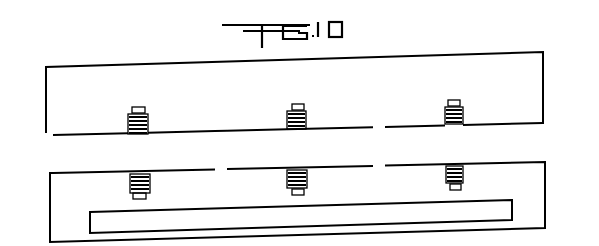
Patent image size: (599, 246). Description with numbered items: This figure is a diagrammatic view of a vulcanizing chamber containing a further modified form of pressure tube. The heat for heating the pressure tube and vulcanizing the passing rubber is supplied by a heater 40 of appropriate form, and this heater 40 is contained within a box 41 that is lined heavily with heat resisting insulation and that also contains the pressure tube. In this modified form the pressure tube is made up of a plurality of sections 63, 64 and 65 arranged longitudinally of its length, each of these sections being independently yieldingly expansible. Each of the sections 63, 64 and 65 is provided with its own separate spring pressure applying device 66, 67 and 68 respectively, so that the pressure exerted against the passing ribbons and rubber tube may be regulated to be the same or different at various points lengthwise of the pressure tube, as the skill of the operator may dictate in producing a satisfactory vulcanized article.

The heater 40 is at (301, 216).
The box 41 is at (545, 190).
The section 63 is at (190, 131).
The section 64 is at (259, 130).
The section 65 is at (405, 127).
The spring pressure applying device 66 is at (128, 118).
The spring pressure applying device 67 is at (306, 113).
The spring pressure applying device 68 is at (463, 110).